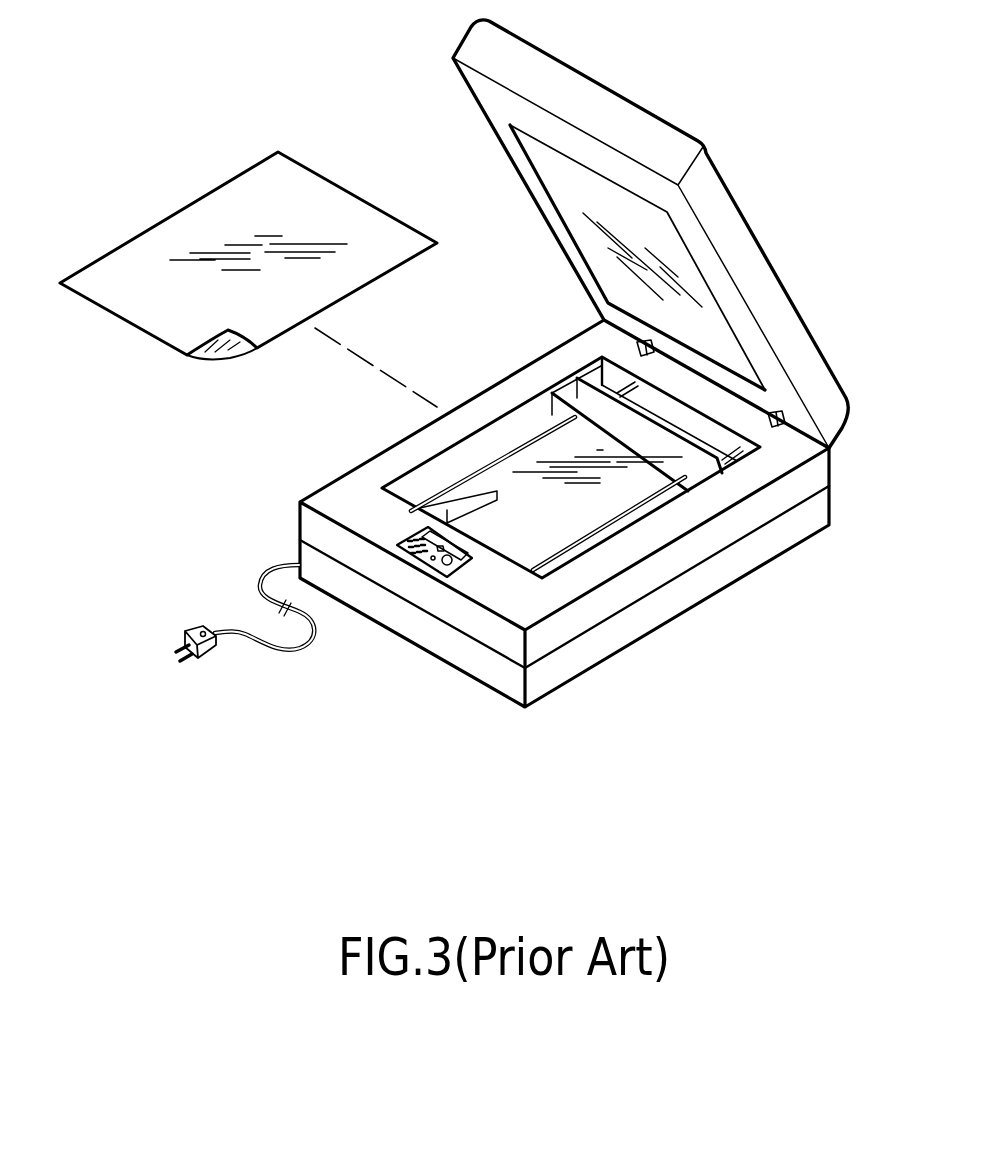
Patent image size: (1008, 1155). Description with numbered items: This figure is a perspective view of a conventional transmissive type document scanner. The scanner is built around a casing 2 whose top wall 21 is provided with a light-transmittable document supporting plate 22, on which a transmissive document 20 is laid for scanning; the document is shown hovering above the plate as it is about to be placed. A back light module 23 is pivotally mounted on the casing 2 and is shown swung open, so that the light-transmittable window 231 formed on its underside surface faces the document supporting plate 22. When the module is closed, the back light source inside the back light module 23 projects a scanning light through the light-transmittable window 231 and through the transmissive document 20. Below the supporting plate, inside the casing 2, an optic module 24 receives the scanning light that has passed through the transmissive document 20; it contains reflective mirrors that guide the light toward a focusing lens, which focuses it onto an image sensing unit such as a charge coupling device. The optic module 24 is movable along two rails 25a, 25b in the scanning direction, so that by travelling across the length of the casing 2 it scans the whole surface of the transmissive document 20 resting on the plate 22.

The casing 2 is at (537, 372).
The transmissive document 20 is at (220, 212).
The top wall 21 is at (773, 465).
The light-transmittable document supporting plate 22 is at (544, 526).
The back light module 23 is at (676, 234).
The light-transmittable window 231 is at (715, 332).
The optic module 24 is at (714, 467).
The rail 25a is at (535, 425).
The rail 25b is at (652, 503).